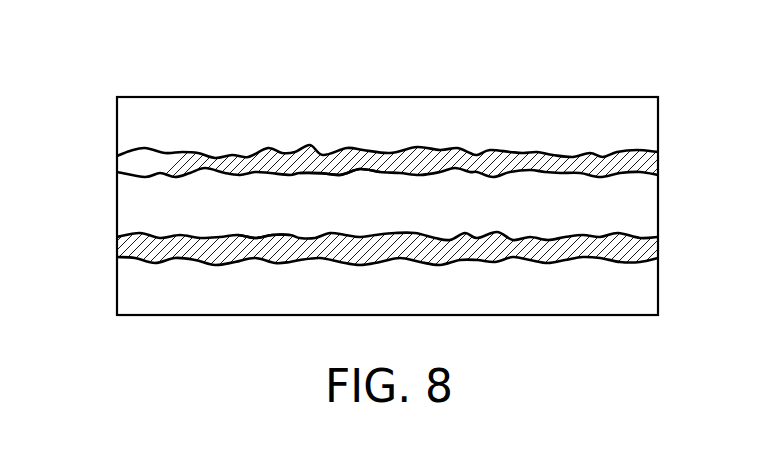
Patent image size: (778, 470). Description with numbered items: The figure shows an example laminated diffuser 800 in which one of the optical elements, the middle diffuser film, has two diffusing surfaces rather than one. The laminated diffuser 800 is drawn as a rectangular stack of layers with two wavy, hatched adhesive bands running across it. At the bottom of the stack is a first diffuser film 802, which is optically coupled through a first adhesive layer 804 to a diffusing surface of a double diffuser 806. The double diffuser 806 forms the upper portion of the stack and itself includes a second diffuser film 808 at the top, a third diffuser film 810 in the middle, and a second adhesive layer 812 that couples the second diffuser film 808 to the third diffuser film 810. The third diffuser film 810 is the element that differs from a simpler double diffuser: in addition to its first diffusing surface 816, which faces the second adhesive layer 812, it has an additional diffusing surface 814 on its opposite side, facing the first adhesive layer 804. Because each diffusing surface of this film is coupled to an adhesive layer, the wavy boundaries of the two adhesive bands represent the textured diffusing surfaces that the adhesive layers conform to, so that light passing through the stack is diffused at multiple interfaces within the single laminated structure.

The laminated diffuser 800 is at (622, 50).
The first diffuser film 802 is at (649, 300).
The first adhesive layer 804 is at (649, 240).
The double diffuser 806 is at (98, 95).
The second diffuser film 808 is at (649, 125).
The third diffuser film 810 is at (649, 212).
The second adhesive layer 812 is at (125, 161).
The additional diffusing surface 814 is at (272, 233).
The first diffusing surface 816 is at (361, 175).